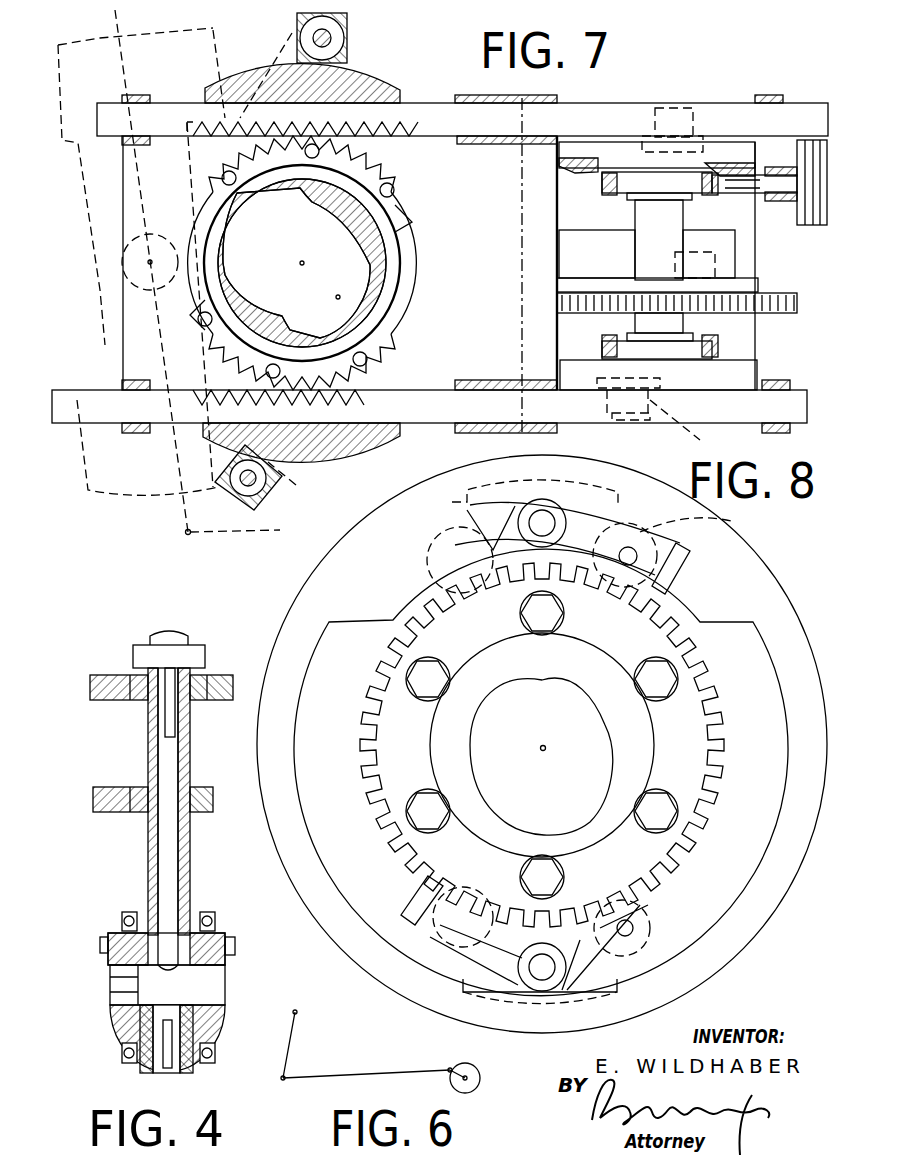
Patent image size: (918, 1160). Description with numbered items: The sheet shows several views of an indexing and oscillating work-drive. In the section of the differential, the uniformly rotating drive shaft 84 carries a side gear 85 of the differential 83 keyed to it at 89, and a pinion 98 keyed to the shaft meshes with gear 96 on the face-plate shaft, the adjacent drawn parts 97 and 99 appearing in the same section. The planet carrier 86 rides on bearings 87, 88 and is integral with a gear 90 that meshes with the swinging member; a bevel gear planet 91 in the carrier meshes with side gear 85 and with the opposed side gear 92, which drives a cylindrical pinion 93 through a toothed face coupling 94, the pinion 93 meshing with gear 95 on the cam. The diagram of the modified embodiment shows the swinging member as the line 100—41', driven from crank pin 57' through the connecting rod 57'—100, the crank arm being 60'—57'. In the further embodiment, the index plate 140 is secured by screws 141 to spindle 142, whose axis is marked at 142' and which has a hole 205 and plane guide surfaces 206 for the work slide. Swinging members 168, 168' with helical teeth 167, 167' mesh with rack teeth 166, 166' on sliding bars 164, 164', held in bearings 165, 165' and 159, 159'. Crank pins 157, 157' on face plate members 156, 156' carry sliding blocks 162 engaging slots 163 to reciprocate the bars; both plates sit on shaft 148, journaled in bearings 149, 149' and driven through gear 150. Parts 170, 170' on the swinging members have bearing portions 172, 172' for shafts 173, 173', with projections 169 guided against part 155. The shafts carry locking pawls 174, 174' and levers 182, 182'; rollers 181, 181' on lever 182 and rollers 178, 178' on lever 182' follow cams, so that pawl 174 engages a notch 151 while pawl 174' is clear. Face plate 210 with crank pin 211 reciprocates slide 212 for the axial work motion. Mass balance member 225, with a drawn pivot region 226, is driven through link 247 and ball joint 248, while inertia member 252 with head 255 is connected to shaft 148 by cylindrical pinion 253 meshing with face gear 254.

In FIG. 7, the sliding bar 164 is at (429, 385).
In FIG. 7, the sliding bar 164' is at (462, 101).
In FIG. 7, the bearing 159 is at (506, 106).
In FIG. 7, the bearing 159' is at (149, 104).
In FIG. 7, the bearing 165 is at (506, 421).
In FIG. 7, the bearing 165' is at (128, 421).
In FIG. 7, the rack teeth 166 is at (321, 436).
In FIG. 7, the rack teeth 166' is at (328, 86).
In FIG. 7, the gear teeth 167 is at (310, 369).
In FIG. 7, the gear teeth 167' is at (327, 157).
In FIG. 7, the swinging member 168 is at (312, 285).
In FIG. 7, the swinging member 168' is at (346, 239).
In FIG. 7, the part 170 is at (302, 480).
In FIG. 7, the part 170' is at (362, 38).
In FIG. 7, the bearing portion 172 is at (239, 491).
In FIG. 7, the bearing portion 172' is at (360, 37).
In FIG. 7, the shaft 173 is at (265, 496).
In FIG. 7, the shaft 173' is at (269, 69).
In FIG. 7, the spindle 142 is at (324, 263).
In FIG. 8, the spindle 142 is at (542, 737).
In FIG. 7, the axis 142' is at (329, 259).
In FIG. 8, the axis 142' is at (570, 755).
In FIG. 7, the plane guide surfaces 206 is at (305, 195).
In FIG. 8, the plane guide surfaces 206 is at (542, 688).
In FIG. 7, the hole 205 is at (338, 297).
In FIG. 7, the crank arm 226 is at (148, 262).
In FIG. 7, the mass balance member 225 is at (133, 490).
In FIG. 7, the ball joint 248 is at (187, 533).
In FIG. 7, the link 247 is at (222, 537).
In FIG. 7, the face plate member 156 is at (662, 360).
In FIG. 7, the face plate member 156' is at (657, 140).
In FIG. 7, the face gear 254 is at (558, 172).
In FIG. 7, the bearing 149 is at (639, 336).
In FIG. 7, the bearing 149' is at (656, 183).
In FIG. 7, the shaft 148 is at (645, 218).
In FIG. 7, the bar or slide 212 is at (603, 262).
In FIG. 7, the face plate 210 is at (725, 283).
In FIG. 7, the crank pin 211 is at (710, 262).
In FIG. 7, the gear 150 is at (775, 313).
In FIG. 7, the inertia member 252 is at (808, 212).
In FIG. 7, the cylindrical pinion 253 is at (722, 192).
In FIG. 7, the head 255 is at (803, 140).
In FIG. 7, the crank pin 157 is at (618, 422).
In FIG. 7, the crank pin 157' is at (677, 102).
In FIG. 7, the sliding block 162 is at (696, 128).
In FIG. 7, the slot 163 is at (642, 422).
In FIG. 8, the part 155 is at (735, 935).
In FIG. 8, the projection 169 is at (462, 990).
In FIG. 8, the locking pawl 174 is at (512, 948).
In FIG. 8, the locking pawl 174' is at (574, 536).
In FIG. 8, the lever 182 is at (660, 985).
In FIG. 8, the lever 182' is at (476, 528).
In FIG. 8, the roller 178 is at (434, 737).
In FIG. 8, the roller 178' is at (687, 550).
In FIG. 8, the roller 181 is at (647, 749).
In FIG. 8, the roller 181' is at (459, 892).
In FIG. 8, the screws 141 is at (395, 670).
In FIG. 8, the index plate 140 is at (695, 722).
In FIG. 8, the notch 151 is at (388, 815).
In FIG. 4, the pinion 98 is at (200, 673).
In FIG. 4, the upper flange 97 is at (118, 683).
In FIG. 4, the gear 96 is at (212, 700).
In FIG. 4, the drive shaft 84 is at (178, 743).
In FIG. 4, the pin 99 is at (164, 722).
In FIG. 4, the gear 95 is at (118, 787).
In FIG. 4, the cylindrical pinion 93 is at (148, 803).
In FIG. 4, the toothed face coupling 94 is at (150, 895).
In FIG. 4, the bearing 87 is at (125, 914).
In FIG. 4, the side gear 92 is at (213, 935).
In FIG. 4, the gear 90 is at (108, 940).
In FIG. 4, the differential 83 is at (110, 966).
In FIG. 4, the bevel gear planet 91 is at (120, 1000).
In FIG. 4, the planet carrier 86 is at (116, 1012).
In FIG. 4, the side gear 85 is at (132, 1035).
In FIG. 4, the bearing 88 is at (128, 1062).
In FIG. 4, the key 89 is at (168, 1068).
In FIG. 6, the swinging member pivot point 100 is at (353, 1059).
In FIG. 6, the swinging member end point 41' is at (315, 1026).
In FIG. 6, the crank pin 57' is at (441, 1055).
In FIG. 6, the crank arm center 60' is at (485, 1078).